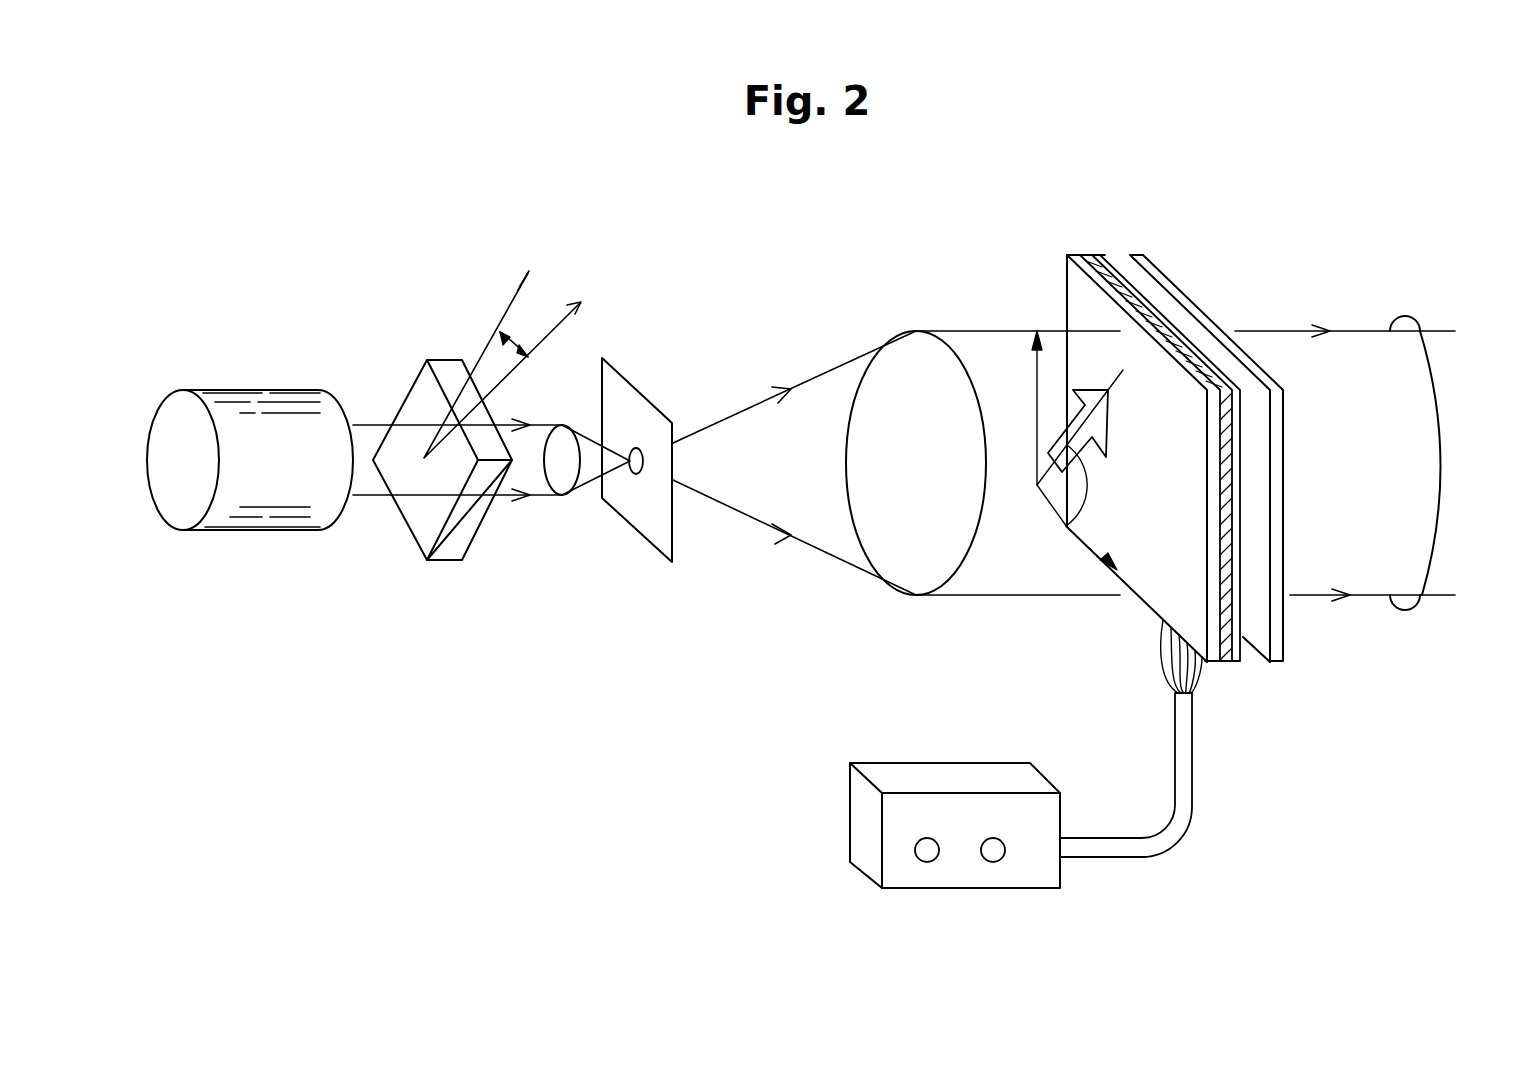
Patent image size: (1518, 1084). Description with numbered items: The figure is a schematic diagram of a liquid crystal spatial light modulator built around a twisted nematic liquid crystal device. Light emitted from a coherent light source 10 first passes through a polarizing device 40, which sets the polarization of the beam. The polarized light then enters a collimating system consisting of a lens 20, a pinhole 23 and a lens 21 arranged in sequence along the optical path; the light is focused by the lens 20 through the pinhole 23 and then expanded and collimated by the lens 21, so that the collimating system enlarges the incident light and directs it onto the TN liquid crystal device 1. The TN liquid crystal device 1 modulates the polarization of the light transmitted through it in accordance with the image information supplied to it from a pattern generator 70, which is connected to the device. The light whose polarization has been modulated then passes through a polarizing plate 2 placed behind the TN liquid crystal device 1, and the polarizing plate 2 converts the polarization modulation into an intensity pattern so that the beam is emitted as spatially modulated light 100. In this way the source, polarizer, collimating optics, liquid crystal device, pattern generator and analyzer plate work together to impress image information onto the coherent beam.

The coherent light source 10 is at (278, 390).
The polarizing device 40 is at (440, 562).
The lens 20 is at (558, 510).
The pinhole 23 is at (647, 395).
The lens 21 is at (916, 331).
The TN liquid crystal device 1 is at (1088, 253).
The polarizing plate 2 is at (1152, 258).
The pattern generator 70 is at (907, 763).
The spacially modulated light 100 is at (1405, 610).